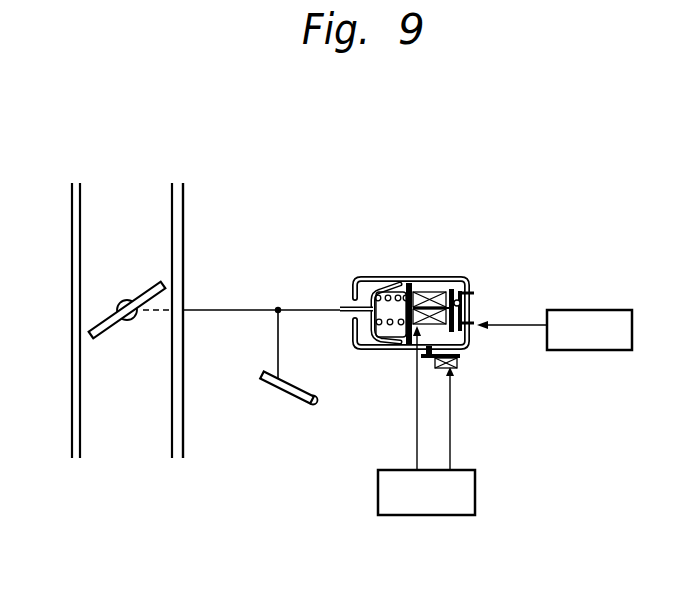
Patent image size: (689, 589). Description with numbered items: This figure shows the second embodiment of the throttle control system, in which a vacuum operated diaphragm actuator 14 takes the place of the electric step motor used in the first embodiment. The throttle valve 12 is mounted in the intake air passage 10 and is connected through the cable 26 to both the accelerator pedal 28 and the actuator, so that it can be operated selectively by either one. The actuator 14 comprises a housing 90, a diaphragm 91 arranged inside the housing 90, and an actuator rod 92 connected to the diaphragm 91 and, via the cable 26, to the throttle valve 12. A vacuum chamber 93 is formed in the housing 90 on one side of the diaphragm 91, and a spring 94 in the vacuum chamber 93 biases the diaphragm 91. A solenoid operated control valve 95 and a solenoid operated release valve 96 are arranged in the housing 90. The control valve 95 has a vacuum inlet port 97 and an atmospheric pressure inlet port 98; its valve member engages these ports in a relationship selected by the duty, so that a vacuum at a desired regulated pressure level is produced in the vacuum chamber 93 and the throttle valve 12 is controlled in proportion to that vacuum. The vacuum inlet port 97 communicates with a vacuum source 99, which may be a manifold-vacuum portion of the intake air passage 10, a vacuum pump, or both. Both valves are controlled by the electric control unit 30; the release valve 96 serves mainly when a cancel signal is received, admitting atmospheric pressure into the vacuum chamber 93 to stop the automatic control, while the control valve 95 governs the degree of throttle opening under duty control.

The intake air passage 10 is at (72, 265).
The throttle valve 12 is at (97, 337).
The cable 26 is at (303, 308).
The accelerator pedal 28 is at (287, 392).
The vacuum operated diaphragm actuator 14 is at (437, 272).
The housing 90 is at (380, 278).
The diaphragm 91 is at (369, 345).
The actuator rod 92 is at (343, 323).
The vacuum chamber 93 is at (404, 335).
The spring 94 is at (408, 282).
The solenoid operated control valve 95 is at (450, 290).
The solenoid operated release valve 96 is at (427, 358).
The vacuum inlet port 97 is at (480, 333).
The atmospheric pressure inlet port 98 is at (482, 291).
The vacuum source 99 is at (598, 352).
The electric control unit 30 is at (475, 496).